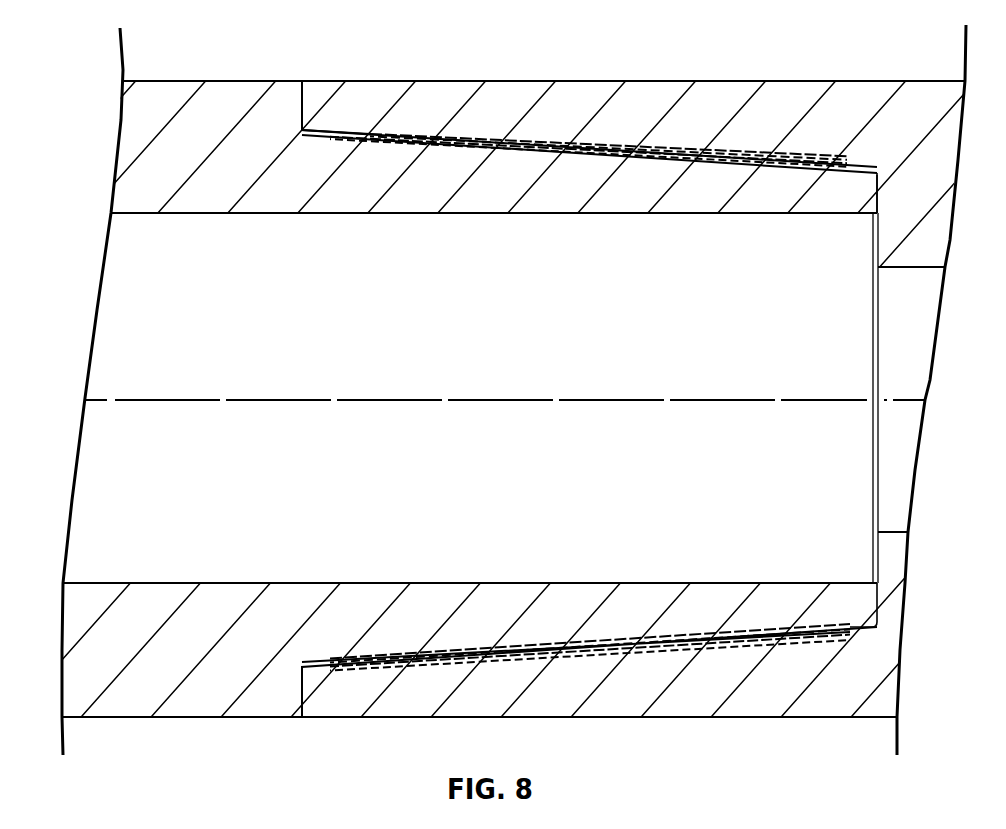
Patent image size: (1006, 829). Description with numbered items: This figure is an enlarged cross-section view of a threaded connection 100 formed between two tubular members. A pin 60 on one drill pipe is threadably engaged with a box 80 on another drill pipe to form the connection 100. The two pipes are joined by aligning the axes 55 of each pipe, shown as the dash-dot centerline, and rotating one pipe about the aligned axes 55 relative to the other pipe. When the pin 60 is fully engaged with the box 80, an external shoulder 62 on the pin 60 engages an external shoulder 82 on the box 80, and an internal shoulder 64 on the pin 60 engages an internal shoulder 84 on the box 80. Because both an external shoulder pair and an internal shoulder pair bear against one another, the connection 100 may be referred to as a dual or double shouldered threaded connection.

The threaded connection 100 is at (582, 42).
The box 80 is at (689, 730).
The pin 60 is at (190, 724).
The external shoulder 82 is at (301, 106).
The external shoulder 62 is at (305, 103).
The internal shoulder 84 is at (872, 168).
The internal shoulder 64 is at (875, 194).
The axis 55 is at (400, 400).